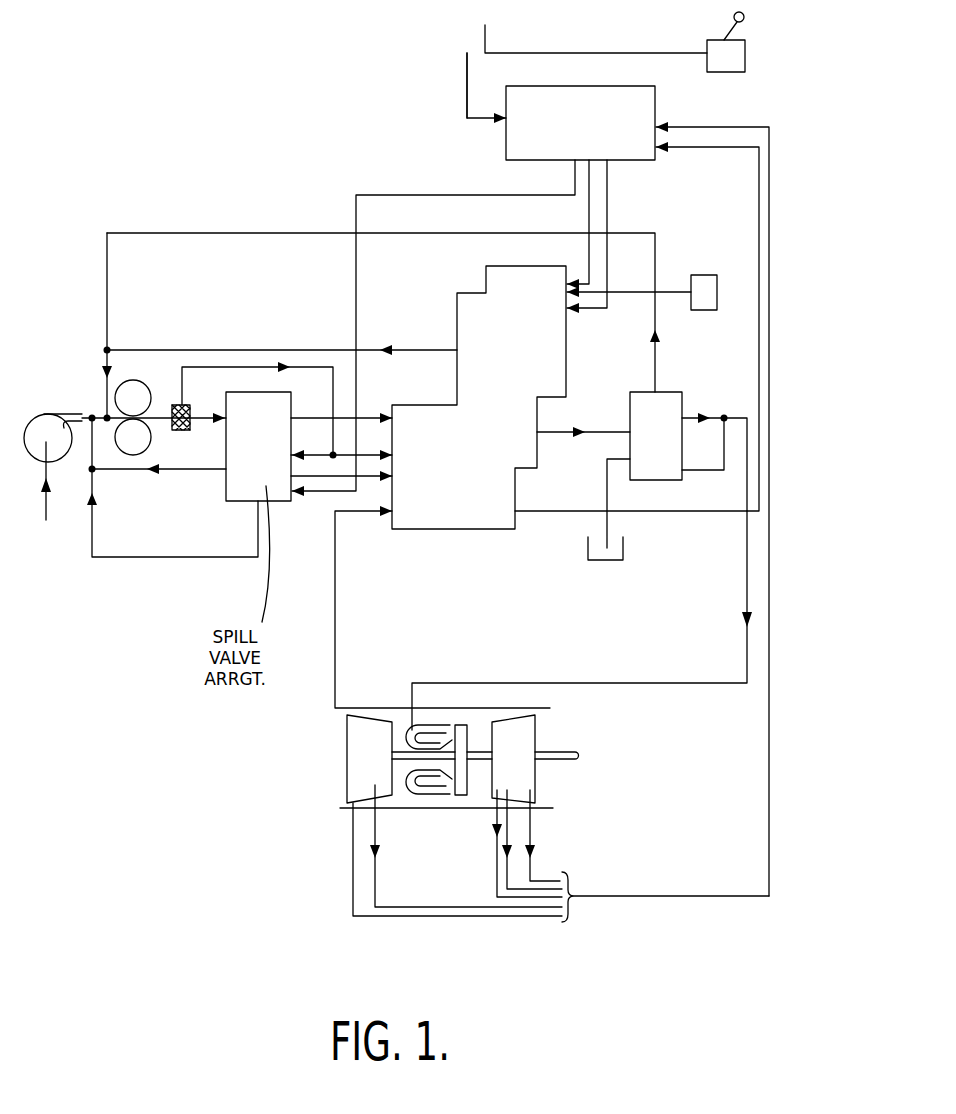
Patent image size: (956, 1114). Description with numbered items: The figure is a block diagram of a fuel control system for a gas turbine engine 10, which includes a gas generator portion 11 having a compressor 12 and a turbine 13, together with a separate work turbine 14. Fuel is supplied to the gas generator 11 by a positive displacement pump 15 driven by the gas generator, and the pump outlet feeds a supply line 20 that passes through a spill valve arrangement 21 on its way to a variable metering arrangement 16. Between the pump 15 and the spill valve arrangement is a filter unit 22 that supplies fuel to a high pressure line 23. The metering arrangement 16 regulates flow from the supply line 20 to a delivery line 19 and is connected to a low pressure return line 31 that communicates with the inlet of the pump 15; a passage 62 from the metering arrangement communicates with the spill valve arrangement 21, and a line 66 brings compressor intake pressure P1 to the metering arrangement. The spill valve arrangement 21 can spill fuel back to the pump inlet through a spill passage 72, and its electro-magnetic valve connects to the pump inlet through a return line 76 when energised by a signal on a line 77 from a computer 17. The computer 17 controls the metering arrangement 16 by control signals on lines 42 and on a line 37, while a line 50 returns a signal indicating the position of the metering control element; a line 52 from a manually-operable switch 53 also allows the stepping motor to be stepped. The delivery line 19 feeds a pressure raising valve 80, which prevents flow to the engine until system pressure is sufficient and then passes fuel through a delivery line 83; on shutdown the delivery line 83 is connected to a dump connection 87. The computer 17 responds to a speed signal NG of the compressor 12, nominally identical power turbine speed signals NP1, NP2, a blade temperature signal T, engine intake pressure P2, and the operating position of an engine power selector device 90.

The gas turbine engine 10 is at (332, 841).
The gas generator portion 11 is at (393, 722).
The compressor 12 is at (360, 750).
The turbine 13 is at (463, 788).
The work turbine 14 is at (515, 740).
The positive displacement pump 15 is at (135, 396).
The variable metering arrangement 16 is at (472, 508).
The computer 17 is at (638, 110).
The delivery line 19 is at (596, 432).
The supply line 20 is at (313, 417).
The spill valve arrangement 21 is at (238, 484).
The filter unit 22 is at (178, 436).
The high pressure line 23 is at (230, 367).
The low pressure return line 31 is at (412, 348).
The control signal line 37 is at (608, 208).
The stepping motor signal lines 42 is at (592, 181).
The transducer signal line 50 is at (757, 307).
The switch signal line 52 is at (670, 292).
The manually-operable switch 53 is at (705, 290).
The passage 62 is at (322, 478).
The compressor intake pressure line 66 is at (333, 630).
The spill passage 72 is at (125, 472).
The return line 76 is at (205, 558).
The shutdown signal line 77 is at (405, 195).
The pressure raising valve 80 is at (665, 425).
The delivery line 83 is at (745, 545).
The dump connection 87 is at (607, 495).
The engine power selector device 90 is at (735, 57).
The compressor intake pressure P1 is at (338, 588).
The engine intake pressure P2 is at (350, 908).
The gas generator speed signal NG is at (388, 910).
The power turbine speed signal NP1 is at (495, 885).
The power turbine speed signal NP2 is at (518, 888).
The power turbine blade temperature signal T is at (532, 826).